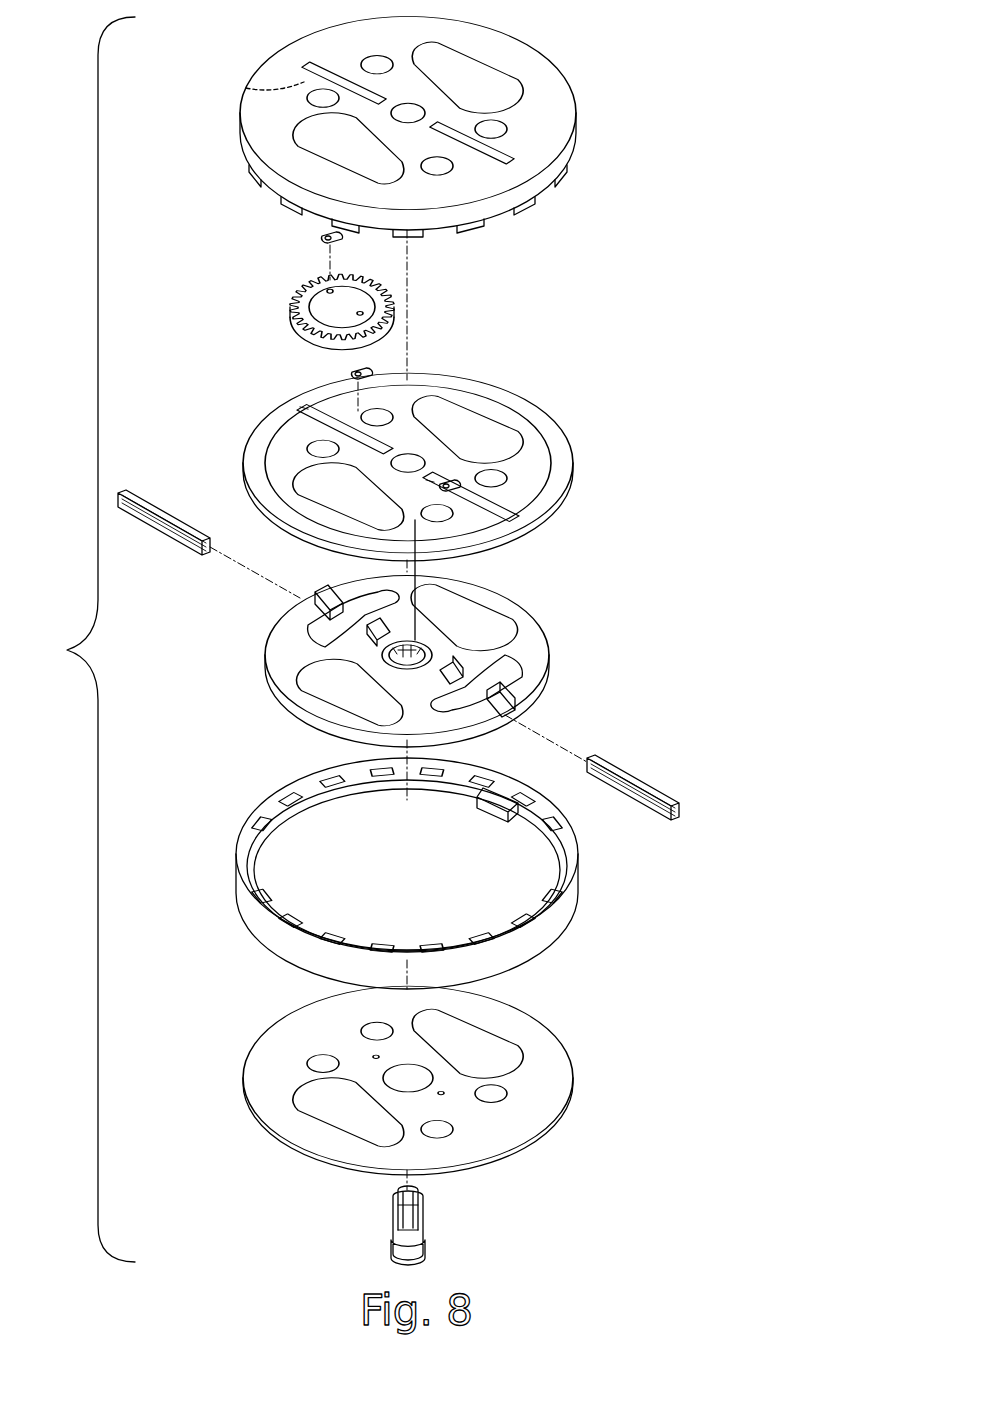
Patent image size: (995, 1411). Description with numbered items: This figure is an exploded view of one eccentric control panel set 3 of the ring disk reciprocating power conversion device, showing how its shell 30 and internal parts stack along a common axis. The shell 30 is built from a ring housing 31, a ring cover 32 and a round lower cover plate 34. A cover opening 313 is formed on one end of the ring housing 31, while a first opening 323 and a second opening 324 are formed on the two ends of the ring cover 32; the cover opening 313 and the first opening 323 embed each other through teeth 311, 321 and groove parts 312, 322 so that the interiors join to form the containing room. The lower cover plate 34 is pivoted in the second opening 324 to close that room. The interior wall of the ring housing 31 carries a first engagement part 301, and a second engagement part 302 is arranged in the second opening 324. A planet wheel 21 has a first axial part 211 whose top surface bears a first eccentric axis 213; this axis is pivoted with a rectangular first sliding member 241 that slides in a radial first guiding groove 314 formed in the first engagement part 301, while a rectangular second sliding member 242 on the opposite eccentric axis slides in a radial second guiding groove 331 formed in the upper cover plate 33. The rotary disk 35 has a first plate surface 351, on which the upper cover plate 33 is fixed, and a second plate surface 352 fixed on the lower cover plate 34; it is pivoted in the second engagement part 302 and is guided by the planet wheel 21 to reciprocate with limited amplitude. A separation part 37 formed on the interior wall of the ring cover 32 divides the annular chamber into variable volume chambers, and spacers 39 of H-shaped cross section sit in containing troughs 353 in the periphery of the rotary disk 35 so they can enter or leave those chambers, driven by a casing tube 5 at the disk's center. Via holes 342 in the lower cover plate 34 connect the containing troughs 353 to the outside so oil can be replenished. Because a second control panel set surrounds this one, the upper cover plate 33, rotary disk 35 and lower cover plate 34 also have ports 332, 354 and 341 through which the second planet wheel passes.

The eccentric control panel set 3 is at (89, 639).
The casing tube 5 is at (392, 1240).
The planet wheel 21 is at (303, 293).
The first axial part 211 is at (342, 307).
The first eccentric axis 213 is at (330, 291).
The first sliding member 241 is at (322, 240).
The second sliding member 242 is at (352, 373).
The shell 30 is at (577, 92).
The ring housing 31 is at (399, 147).
The first engagement part 301 is at (387, 127).
The teeth 311 is at (510, 224).
The groove parts 312 is at (536, 202).
The cover opening 313 is at (468, 242).
The first guiding groove 314 is at (408, 113).
The ring cover 32 is at (389, 873).
The teeth 321 is at (263, 799).
The groove parts 322 is at (256, 833).
The first opening 323 is at (318, 782).
The second opening 324 is at (528, 960).
The second engagement part 302 is at (275, 968).
The upper cover plate 33 is at (420, 455).
The second guiding groove 331 is at (535, 472).
The port 332 is at (408, 463).
The lower cover plate 34 is at (376, 1082).
The port 341 is at (408, 1078).
The via hole 342 is at (408, 1075).
The rotary disk 35 is at (402, 653).
The first plate surface 351 is at (354, 616).
The second plate surface 352 is at (349, 692).
The containing trough 353 is at (477, 686).
The port 354 is at (464, 617).
The separation part 37 is at (490, 812).
The spacer 39 is at (168, 492).